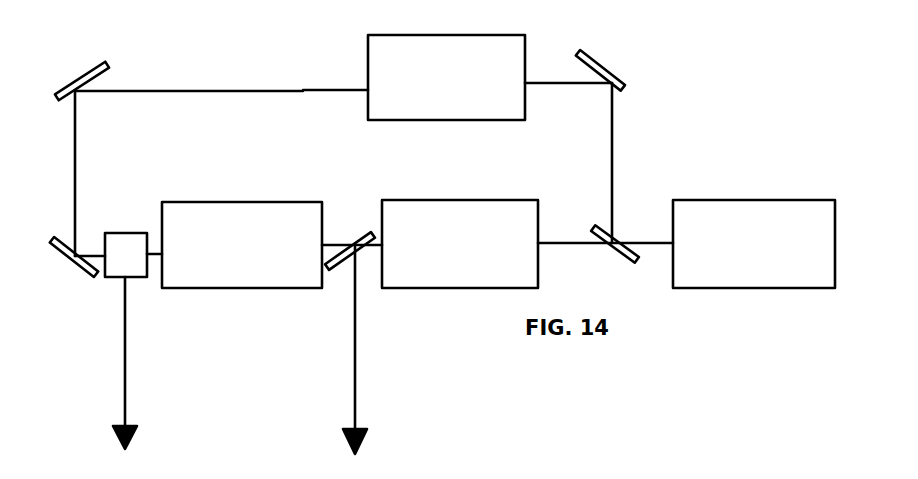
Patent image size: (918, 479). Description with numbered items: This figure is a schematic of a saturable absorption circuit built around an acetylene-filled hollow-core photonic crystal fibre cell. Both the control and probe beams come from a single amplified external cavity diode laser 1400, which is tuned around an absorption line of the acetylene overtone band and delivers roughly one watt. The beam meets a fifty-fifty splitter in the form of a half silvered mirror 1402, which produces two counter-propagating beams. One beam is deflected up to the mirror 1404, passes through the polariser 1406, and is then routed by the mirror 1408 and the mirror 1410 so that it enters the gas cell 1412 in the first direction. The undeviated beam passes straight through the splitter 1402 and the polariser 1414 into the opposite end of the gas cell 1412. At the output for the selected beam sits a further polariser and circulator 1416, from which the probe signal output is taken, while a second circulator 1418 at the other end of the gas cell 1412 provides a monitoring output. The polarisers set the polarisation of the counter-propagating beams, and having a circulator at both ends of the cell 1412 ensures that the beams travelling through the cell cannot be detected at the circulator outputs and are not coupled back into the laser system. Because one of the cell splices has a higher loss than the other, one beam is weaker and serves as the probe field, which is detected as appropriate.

The amplified external cavity diode laser 1400 is at (754, 244).
The half silvered mirror 1402 is at (638, 263).
The mirror 1404 is at (656, 40).
The polariser 1406 is at (446, 77).
The mirror 1408 is at (104, 64).
The mirror 1410 is at (56, 268).
The gas cell 1412 is at (242, 245).
The polariser 1414 is at (460, 244).
The polariser and circulator 1416 is at (367, 232).
The second circulator 1418 is at (135, 231).